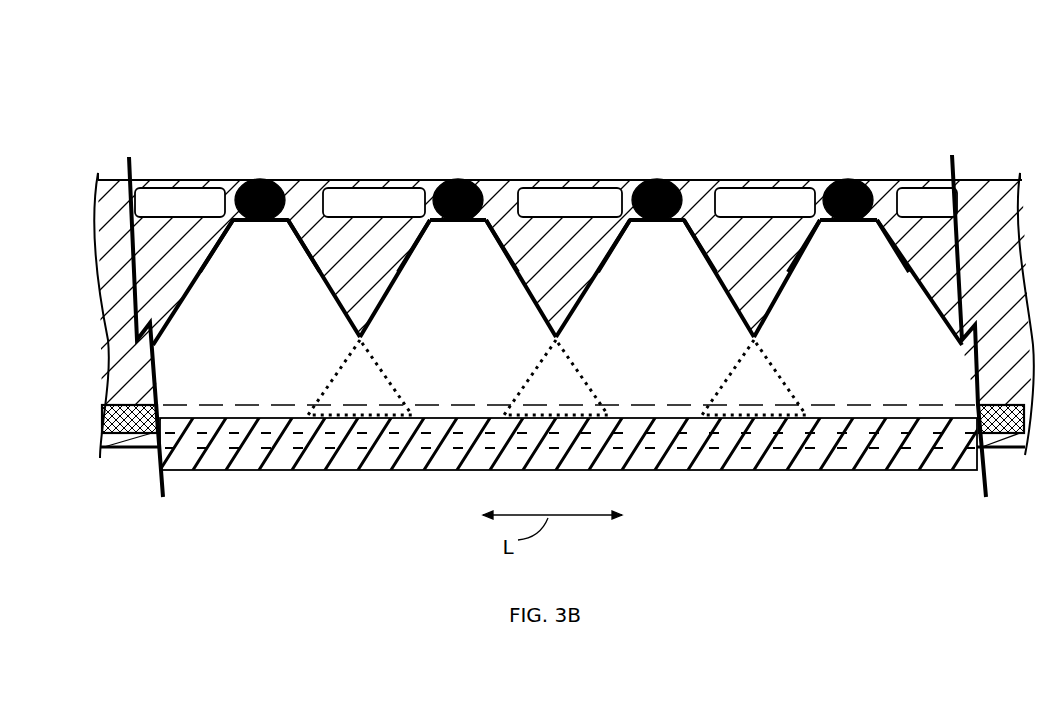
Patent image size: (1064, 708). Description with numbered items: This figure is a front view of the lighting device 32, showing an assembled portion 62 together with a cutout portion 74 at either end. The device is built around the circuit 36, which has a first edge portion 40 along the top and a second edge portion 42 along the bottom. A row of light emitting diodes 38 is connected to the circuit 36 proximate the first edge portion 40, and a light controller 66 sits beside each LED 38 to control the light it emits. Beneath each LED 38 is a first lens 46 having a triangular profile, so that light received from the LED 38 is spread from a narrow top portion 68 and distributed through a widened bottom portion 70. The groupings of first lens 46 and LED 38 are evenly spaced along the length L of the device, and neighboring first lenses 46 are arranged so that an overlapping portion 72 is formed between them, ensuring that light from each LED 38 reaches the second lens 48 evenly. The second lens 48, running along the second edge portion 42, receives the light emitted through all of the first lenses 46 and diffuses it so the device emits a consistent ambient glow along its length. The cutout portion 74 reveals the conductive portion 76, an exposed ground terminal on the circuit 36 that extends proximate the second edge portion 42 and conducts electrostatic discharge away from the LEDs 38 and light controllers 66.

The lighting device 32 is at (779, 60).
The circuit 36 is at (312, 180).
The light emitting diode 38 is at (262, 195).
The first edge portion 40 is at (228, 172).
The second edge portion 42 is at (130, 453).
The first lens 46 is at (250, 324).
The second lens 48 is at (650, 462).
The assembled portion 62 is at (646, 130).
The light controller 66 is at (186, 200).
The narrow top portion 68 is at (230, 265).
The widened bottom portion 70 is at (248, 387).
The overlapping portion 72 is at (348, 397).
The cutout portion 74 is at (111, 172).
The conductive portion 76 is at (103, 418).